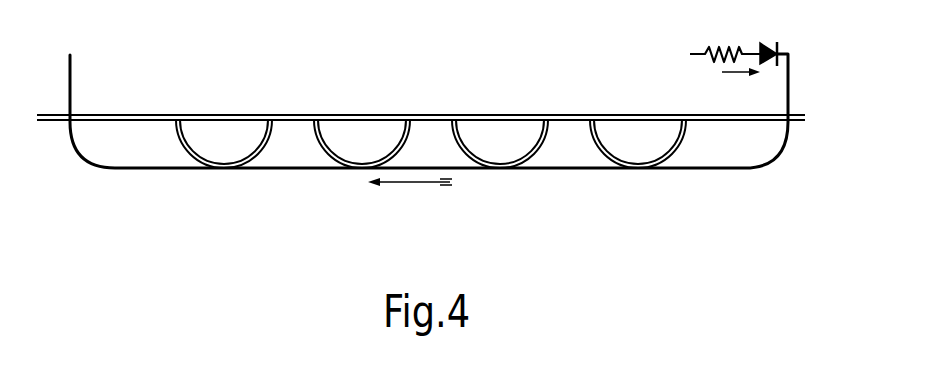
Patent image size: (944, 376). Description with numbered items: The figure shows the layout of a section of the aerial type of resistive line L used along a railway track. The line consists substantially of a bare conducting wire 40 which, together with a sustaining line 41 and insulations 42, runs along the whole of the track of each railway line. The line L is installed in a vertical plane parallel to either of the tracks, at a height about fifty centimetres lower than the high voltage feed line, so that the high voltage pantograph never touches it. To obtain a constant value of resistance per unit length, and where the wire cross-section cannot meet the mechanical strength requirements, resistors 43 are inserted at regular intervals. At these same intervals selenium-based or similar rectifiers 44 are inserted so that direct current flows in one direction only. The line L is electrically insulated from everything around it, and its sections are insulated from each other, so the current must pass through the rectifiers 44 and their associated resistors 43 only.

The bare conducting wire 40 is at (429, 143).
The sustaining line 41 is at (435, 118).
The insulations 42 is at (257, 152).
The resistors 43 is at (715, 43).
The rectifiers 44 is at (768, 41).
The line L is at (328, 103).